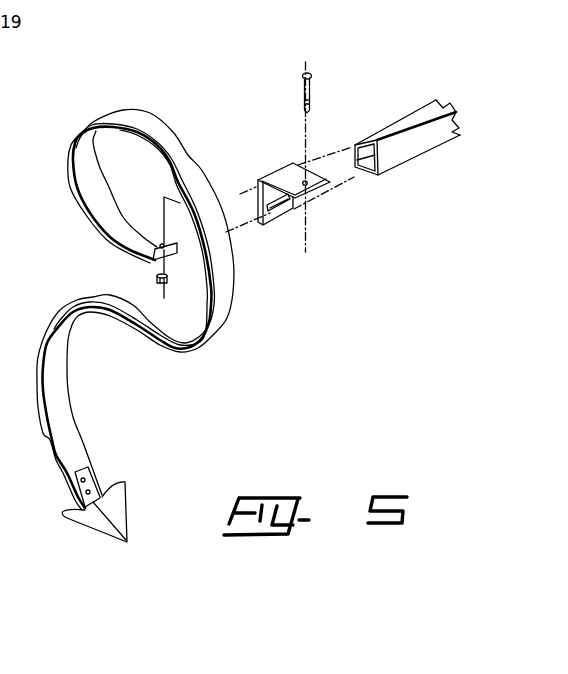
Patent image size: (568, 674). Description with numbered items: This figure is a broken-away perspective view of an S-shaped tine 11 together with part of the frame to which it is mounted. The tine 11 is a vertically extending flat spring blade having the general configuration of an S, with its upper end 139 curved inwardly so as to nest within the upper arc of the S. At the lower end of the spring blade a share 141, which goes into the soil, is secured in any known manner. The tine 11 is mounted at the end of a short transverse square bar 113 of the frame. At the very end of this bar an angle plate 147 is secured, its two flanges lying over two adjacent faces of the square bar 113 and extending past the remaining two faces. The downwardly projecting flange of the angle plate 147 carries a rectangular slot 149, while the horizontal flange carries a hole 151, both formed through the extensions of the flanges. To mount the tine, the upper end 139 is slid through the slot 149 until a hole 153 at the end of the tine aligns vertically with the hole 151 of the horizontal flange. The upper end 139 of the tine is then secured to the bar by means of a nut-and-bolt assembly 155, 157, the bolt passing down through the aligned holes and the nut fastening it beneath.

The tine 11 is at (217, 297).
The square tool bar tube 113 is at (410, 123).
The upper end 139 is at (131, 231).
The share 141 is at (128, 502).
The angle plate 147 is at (294, 219).
The rectangular slot 149 is at (284, 201).
The hole 151 is at (307, 185).
The hole 153 is at (175, 251).
The nut-and-bolt assembly 155 is at (310, 92).
The nut-and-bolt assembly 157 is at (156, 280).